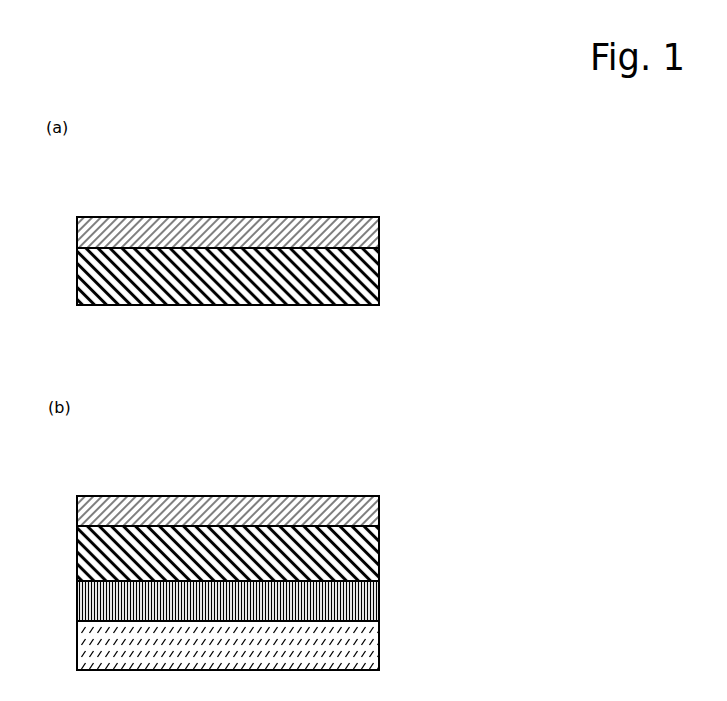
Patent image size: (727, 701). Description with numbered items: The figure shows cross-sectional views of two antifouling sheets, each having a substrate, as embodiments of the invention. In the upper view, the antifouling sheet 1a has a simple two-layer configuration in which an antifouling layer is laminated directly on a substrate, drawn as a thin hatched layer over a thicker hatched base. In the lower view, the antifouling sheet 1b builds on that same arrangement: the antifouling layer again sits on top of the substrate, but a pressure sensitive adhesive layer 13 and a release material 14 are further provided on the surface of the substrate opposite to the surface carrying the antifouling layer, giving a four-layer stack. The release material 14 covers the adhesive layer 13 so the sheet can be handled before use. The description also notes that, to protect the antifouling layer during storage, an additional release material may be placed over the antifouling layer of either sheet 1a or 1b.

The antifouling sheet 1a is at (365, 172).
The antifouling sheet 1b is at (368, 449).
The pressure sensitive adhesive layer 13 is at (367, 615).
The release material 14 is at (367, 653).